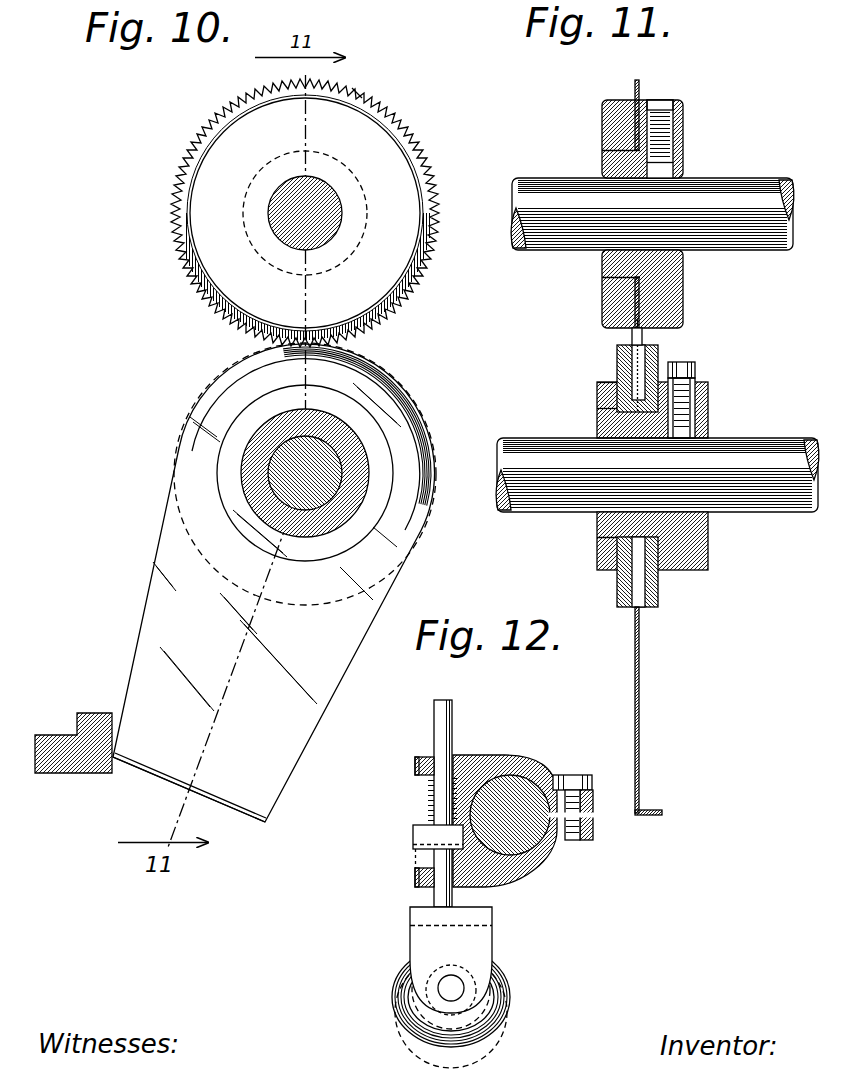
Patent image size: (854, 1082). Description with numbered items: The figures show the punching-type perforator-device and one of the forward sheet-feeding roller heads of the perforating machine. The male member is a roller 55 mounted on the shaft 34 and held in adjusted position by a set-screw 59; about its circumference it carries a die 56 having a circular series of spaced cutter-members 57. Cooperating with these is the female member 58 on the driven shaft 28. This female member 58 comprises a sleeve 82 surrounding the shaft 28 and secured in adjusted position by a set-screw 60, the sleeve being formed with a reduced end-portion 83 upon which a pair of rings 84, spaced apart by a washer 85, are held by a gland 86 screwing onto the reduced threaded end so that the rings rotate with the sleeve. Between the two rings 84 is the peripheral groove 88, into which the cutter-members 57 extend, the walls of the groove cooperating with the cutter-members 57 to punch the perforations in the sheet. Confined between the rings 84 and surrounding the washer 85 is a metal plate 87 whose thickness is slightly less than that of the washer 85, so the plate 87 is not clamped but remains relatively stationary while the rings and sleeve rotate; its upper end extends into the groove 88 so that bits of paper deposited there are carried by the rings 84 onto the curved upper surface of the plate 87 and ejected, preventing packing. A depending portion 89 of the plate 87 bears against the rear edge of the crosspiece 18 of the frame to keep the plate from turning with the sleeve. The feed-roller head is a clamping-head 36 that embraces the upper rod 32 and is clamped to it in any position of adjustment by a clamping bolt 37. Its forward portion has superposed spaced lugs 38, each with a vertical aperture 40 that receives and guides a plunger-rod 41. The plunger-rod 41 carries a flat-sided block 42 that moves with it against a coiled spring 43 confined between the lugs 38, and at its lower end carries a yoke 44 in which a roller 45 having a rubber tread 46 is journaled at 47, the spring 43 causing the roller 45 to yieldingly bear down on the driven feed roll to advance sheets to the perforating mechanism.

In FIG. 10, the crosspiece 18 is at (88, 765).
In FIG. 10, the shaft 28 is at (270, 460).
In FIG. 11, the shaft 28 is at (762, 455).
In FIG. 12, the upper rod 32 is at (520, 790).
In FIG. 10, the shaft 34 is at (268, 214).
In FIG. 11, the shaft 34 is at (727, 192).
In FIG. 12, the clamping-head 36 is at (470, 770).
In FIG. 12, the clamping bolt 37 is at (570, 785).
In FIG. 12, the lug 38 is at (415, 760).
In FIG. 12, the aperture 40 is at (415, 767).
In FIG. 12, the plunger-rod 41 is at (440, 733).
In FIG. 12, the flat-sided block 42 is at (420, 836).
In FIG. 12, the coiled spring 43 is at (430, 800).
In FIG. 12, the yoke 44 is at (420, 918).
In FIG. 12, the roller 45 is at (495, 1005).
In FIG. 12, the rubber tread 46 is at (500, 990).
In FIG. 12, the journal 47 is at (460, 985).
In FIG. 10, the roller 55 is at (305, 213).
In FIG. 11, the roller 55 is at (673, 285).
In FIG. 10, the die 56 is at (392, 316).
In FIG. 11, the die 56 is at (633, 334).
In FIG. 10, the cutter-member 57 is at (375, 85).
In FIG. 11, the cutter-member 57 is at (639, 85).
In FIG. 11, the female member 58 is at (765, 558).
In FIG. 11, the set-screw 59 is at (683, 112).
In FIG. 11, the set-screw 60 is at (692, 380).
In FIG. 11, the sleeve 82 is at (690, 562).
In FIG. 10, the reduced end-portion 83 is at (332, 520).
In FIG. 11, the reduced end-portion 83 is at (597, 420).
In FIG. 11, the ring 84 is at (617, 362).
In FIG. 10, the washer 85 is at (253, 528).
In FIG. 11, the washer 85 is at (635, 400).
In FIG. 11, the gland 86 is at (605, 385).
In FIG. 10, the plate 87 is at (392, 548).
In FIG. 11, the plate 87 is at (640, 637).
In FIG. 10, the peripheral groove 88 is at (232, 372).
In FIG. 11, the peripheral groove 88 is at (648, 342).
In FIG. 10, the depending portion 89 is at (270, 788).
In FIG. 11, the depending portion 89 is at (643, 790).